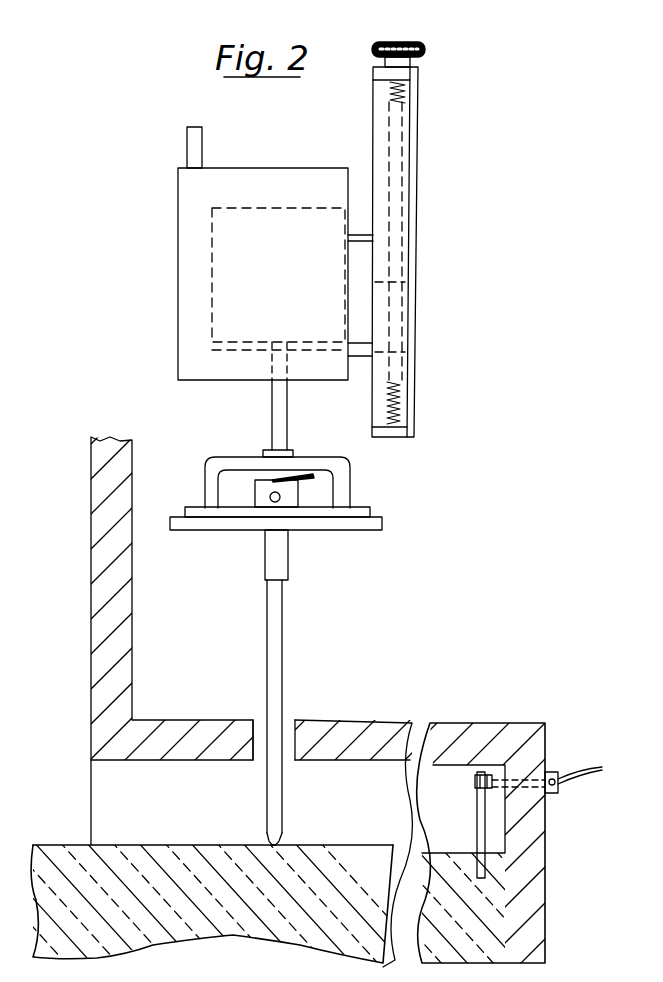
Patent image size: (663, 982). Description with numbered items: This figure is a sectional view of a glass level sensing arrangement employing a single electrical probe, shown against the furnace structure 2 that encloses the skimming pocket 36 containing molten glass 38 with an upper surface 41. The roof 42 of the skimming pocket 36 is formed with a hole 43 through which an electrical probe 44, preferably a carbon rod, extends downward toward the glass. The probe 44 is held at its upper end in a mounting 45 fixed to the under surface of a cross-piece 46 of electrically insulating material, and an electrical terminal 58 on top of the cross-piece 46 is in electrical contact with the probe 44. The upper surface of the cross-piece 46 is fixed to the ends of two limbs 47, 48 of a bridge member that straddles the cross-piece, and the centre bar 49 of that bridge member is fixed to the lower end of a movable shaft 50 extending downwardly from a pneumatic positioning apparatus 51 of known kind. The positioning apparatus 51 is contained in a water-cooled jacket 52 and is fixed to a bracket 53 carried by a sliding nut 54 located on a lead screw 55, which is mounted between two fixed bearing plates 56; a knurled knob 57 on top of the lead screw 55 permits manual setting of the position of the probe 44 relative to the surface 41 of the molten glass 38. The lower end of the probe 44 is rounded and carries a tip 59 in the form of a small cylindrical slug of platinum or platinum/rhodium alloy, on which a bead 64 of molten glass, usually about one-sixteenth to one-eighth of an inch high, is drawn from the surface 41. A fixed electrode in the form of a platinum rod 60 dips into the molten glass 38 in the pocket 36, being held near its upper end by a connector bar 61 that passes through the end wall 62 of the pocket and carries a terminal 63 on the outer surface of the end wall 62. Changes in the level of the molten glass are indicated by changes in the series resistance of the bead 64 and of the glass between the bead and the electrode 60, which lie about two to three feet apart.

The wall of housing 2 is at (120, 548).
The skimming pocket 36 is at (123, 798).
The molten glass 38 is at (242, 917).
The surface of the molten glass 41 is at (173, 846).
The roof of the skimming pocket 42 is at (337, 732).
The hole 43 is at (260, 733).
The electrical probe 44 is at (278, 643).
The mounting 45 is at (280, 548).
The cross-piece 46 is at (365, 520).
The limb of bridge member 47 is at (213, 477).
The limb of bridge member 48 is at (345, 477).
The centre bar of bridge member 49 is at (299, 466).
The movable shaft 50 is at (272, 411).
The pneumatic positioning apparatus 51 is at (242, 227).
The water-cooled jacket 52 is at (290, 180).
The bracket 53 is at (360, 253).
The sliding nut 54 is at (378, 303).
The lead screw 55 is at (398, 107).
The fixed bearing plate 56 is at (380, 76).
The knurled knob 57 is at (418, 42).
The electrical terminal 58 is at (293, 495).
The tip 59 is at (278, 842).
The rod 60 is at (478, 828).
The connector bar 61 is at (477, 785).
The end wall of the pocket 62 is at (535, 855).
The terminal 63 is at (553, 772).
The bead of molten glass 64 is at (268, 843).